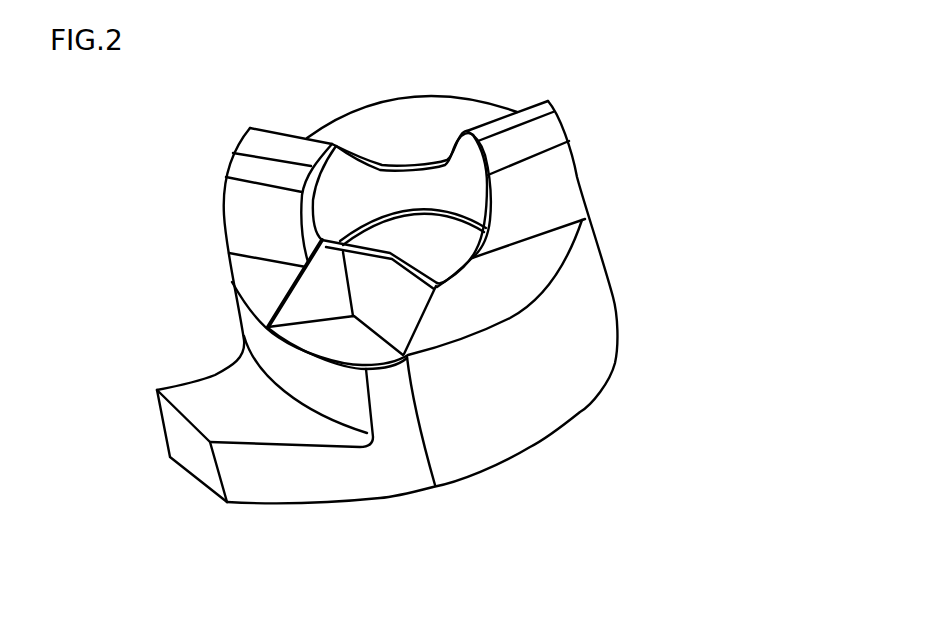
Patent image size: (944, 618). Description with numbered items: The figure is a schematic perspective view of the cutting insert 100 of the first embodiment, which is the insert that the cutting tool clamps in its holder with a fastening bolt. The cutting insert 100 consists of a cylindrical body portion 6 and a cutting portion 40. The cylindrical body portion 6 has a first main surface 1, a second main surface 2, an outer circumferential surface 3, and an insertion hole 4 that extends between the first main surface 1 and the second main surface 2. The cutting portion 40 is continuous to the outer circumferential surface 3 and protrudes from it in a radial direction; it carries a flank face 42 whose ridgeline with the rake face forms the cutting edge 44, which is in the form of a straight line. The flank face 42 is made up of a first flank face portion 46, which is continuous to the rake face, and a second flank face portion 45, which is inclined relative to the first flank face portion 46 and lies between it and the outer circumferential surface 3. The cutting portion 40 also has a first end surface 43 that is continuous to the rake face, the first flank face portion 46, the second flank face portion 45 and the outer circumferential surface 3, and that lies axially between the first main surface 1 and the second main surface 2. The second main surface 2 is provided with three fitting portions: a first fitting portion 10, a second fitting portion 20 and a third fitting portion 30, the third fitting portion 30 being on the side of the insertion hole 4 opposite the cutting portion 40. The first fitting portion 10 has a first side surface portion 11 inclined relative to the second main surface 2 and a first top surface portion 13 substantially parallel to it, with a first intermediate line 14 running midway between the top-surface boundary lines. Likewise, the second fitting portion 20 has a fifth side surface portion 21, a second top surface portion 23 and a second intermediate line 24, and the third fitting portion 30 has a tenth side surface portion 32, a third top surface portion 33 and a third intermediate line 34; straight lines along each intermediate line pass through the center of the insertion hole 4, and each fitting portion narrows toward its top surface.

The cutting insert 100 is at (592, 83).
The first main surface 1 is at (508, 462).
The second main surface 2 is at (430, 122).
The outer circumferential surface 3 is at (255, 335).
The insertion hole 4 is at (420, 240).
The cylindrical body portion 6 is at (630, 508).
The first fitting portion 10 is at (305, 536).
The first side surface portion 11 is at (392, 320).
The first top surface portion 13 is at (347, 297).
The first intermediate line 14 is at (333, 287).
The second fitting portion 20 is at (181, 123).
The fifth side surface portion 21 is at (257, 221).
The second top surface portion 23 is at (257, 162).
The second intermediate line 24 is at (265, 152).
The third fitting portion 30 is at (642, 95).
The tenth side surface portion 32 is at (565, 178).
The third top surface portion 33 is at (545, 126).
The third intermediate line 34 is at (553, 103).
The cutting portion 40 is at (88, 562).
The flank face 42 is at (272, 532).
The first end surface 43 is at (157, 391).
The cutting edge 44 is at (227, 412).
The second flank face portion 45 is at (265, 473).
The first flank face portion 46 is at (192, 457).